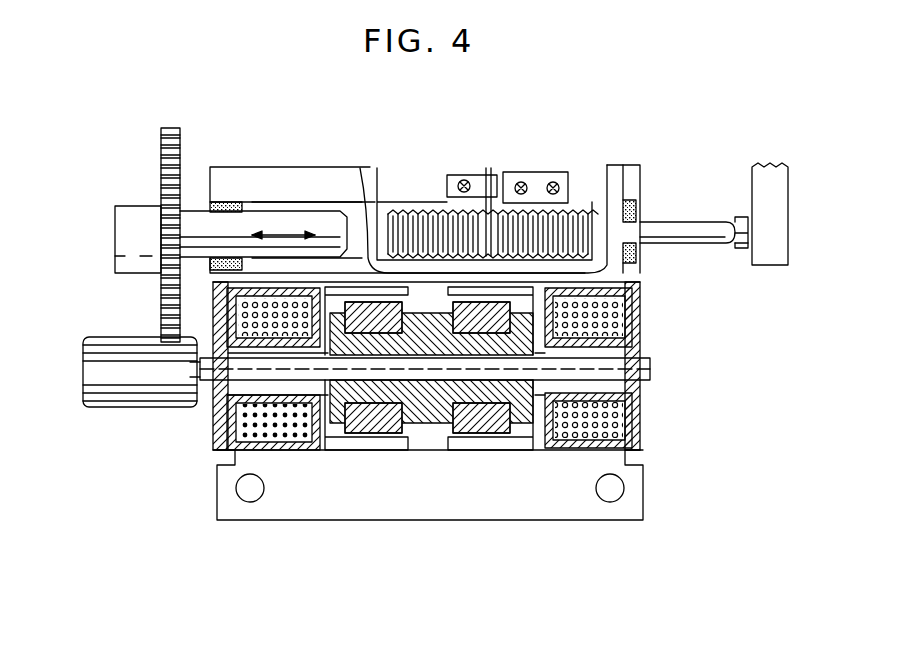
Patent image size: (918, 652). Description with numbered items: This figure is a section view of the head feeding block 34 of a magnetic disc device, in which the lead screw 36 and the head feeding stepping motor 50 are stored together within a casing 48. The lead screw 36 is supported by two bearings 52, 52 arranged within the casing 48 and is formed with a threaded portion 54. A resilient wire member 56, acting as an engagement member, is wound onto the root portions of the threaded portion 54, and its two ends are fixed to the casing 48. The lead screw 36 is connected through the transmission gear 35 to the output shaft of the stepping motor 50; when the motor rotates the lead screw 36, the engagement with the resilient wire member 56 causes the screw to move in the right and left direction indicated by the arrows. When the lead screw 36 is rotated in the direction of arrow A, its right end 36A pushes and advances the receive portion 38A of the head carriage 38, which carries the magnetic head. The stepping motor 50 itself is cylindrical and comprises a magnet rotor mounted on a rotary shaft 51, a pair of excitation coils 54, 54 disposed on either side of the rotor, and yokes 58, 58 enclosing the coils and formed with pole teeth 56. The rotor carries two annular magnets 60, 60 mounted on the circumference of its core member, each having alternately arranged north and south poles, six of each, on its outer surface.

The head feeding block 34 is at (335, 166).
The transmission gear 35 is at (133, 337).
The lead screw 36 is at (661, 232).
The right end of the lead screw 36A is at (735, 226).
The head carriage 38 is at (773, 255).
The receive portion of the head carriage 38A is at (745, 248).
The casing 48 is at (437, 168).
The stepping motor 50 is at (432, 423).
The rotary shaft 51 is at (210, 375).
The bearing 52 is at (229, 204).
The threaded portion 54 is at (410, 215).
The resilient wire member 56 is at (488, 200).
The yoke 58 is at (323, 452).
The annular magnet 60 is at (398, 431).
The arrow A is at (135, 222).